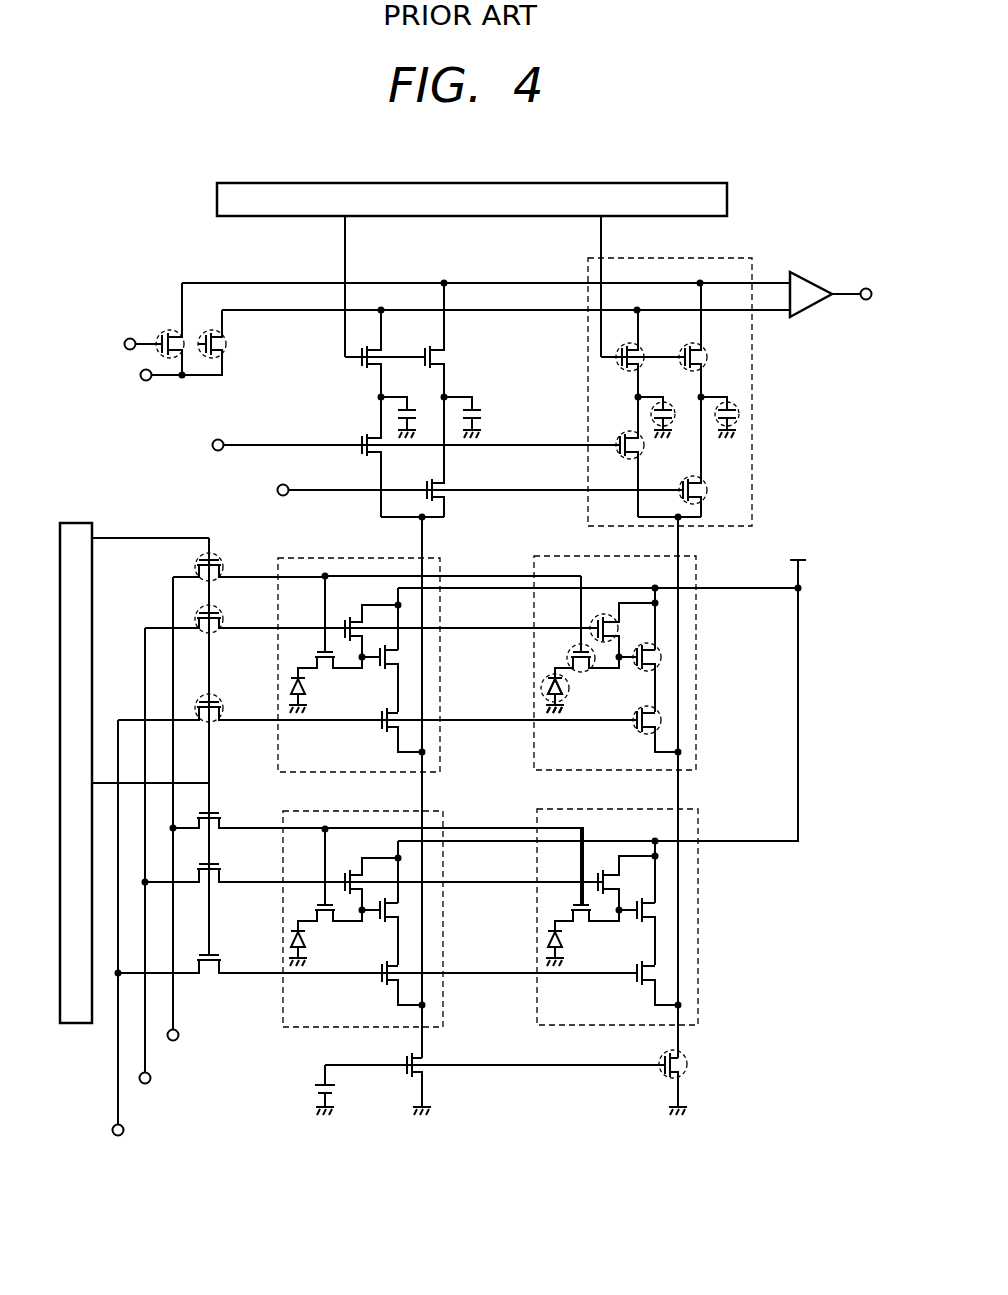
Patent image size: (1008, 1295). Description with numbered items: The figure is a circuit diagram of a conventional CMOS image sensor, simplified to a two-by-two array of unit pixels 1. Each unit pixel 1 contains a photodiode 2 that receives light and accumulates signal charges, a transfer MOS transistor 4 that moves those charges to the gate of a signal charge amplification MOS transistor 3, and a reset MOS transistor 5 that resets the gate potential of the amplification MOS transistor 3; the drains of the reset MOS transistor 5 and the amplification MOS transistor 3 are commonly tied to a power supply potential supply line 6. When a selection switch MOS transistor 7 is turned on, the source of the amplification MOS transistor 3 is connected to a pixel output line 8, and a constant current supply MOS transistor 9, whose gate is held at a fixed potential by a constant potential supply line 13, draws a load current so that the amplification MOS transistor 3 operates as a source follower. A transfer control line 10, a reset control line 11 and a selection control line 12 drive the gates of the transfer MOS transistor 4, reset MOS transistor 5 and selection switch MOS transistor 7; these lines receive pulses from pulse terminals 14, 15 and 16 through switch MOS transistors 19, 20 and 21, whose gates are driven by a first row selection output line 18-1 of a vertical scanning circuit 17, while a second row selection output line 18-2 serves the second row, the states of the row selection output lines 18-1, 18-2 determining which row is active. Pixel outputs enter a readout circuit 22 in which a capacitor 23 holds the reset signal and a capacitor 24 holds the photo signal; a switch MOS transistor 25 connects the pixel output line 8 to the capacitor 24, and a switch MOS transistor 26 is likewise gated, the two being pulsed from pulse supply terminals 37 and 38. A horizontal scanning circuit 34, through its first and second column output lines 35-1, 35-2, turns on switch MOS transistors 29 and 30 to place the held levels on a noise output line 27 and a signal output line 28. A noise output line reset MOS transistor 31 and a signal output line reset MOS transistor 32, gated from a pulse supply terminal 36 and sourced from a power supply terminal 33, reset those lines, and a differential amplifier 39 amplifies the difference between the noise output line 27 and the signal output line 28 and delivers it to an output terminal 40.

The unit pixel 1 is at (318, 558).
The photodiode 2 is at (541, 690).
The signal charge amplification MOS transistor 3 is at (662, 659).
The transfer MOS transistor 4 is at (567, 662).
The reset MOS transistor 5 is at (591, 622).
The power supply potential supply line 6 is at (800, 619).
The selection switch MOS transistor 7 is at (662, 721).
The pixel output line 8 is at (683, 905).
The constant current supply MOS transistor 9 is at (688, 1065).
The transfer control line 10 is at (480, 576).
The reset control line 11 is at (470, 628).
The selection control line 12 is at (462, 720).
The constant potential supply line 13 is at (535, 1072).
The pulse terminal 14 is at (178, 1042).
The pulse terminal 15 is at (150, 1084).
The pulse terminal 16 is at (122, 1136).
The vertical scanning circuit 17 is at (76, 523).
The first row selection output line 18-1 is at (125, 538).
The second row selection output line 18-2 is at (191, 783).
The switch MOS transistor 19 is at (223, 570).
The switch MOS transistor 20 is at (223, 620).
The switch MOS transistor 21 is at (223, 709).
The readout circuit 22 is at (752, 478).
The capacitor 23 is at (672, 424).
The capacitor 24 is at (740, 412).
The switch MOS transistor 25 is at (616, 438).
The switch MOS transistor 26 is at (706, 493).
The noise output line 27 is at (772, 310).
The signal output line 28 is at (772, 283).
The switch MOS transistor 29 is at (627, 371).
The switch MOS transistor 30 is at (705, 364).
The noise output line reset MOS transistor 31 is at (228, 345).
The signal output line reset MOS transistor 32 is at (170, 330).
The power supply terminal 33 is at (141, 374).
The horizontal scanning circuit 34 is at (648, 183).
The output line 35-1 is at (345, 240).
The output line 35-2 is at (601, 240).
The pulse supply terminal 36 is at (124, 343).
The pulse supply terminal 37 is at (213, 442).
The pulse supply terminal 38 is at (278, 488).
The differential amplifier 39 is at (810, 273).
The output terminal 40 is at (866, 288).